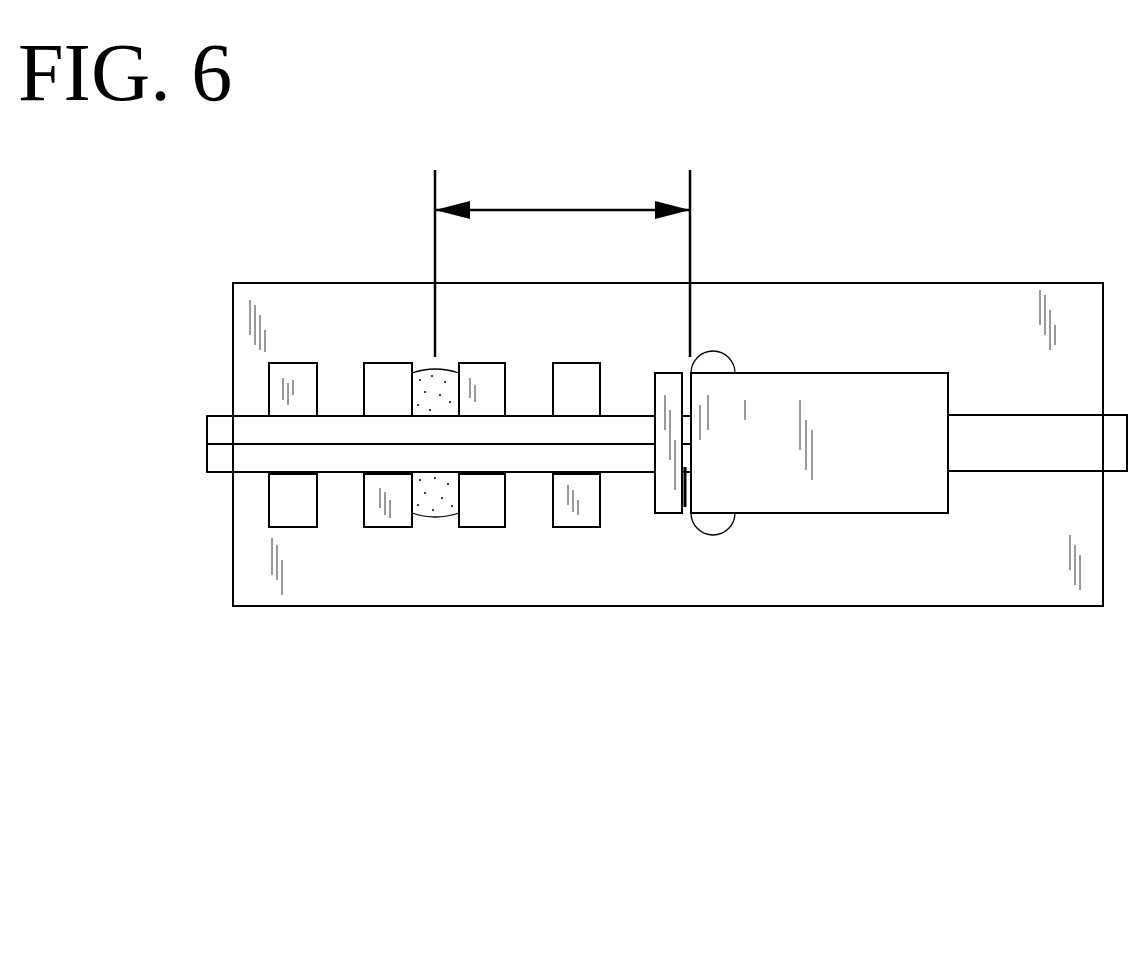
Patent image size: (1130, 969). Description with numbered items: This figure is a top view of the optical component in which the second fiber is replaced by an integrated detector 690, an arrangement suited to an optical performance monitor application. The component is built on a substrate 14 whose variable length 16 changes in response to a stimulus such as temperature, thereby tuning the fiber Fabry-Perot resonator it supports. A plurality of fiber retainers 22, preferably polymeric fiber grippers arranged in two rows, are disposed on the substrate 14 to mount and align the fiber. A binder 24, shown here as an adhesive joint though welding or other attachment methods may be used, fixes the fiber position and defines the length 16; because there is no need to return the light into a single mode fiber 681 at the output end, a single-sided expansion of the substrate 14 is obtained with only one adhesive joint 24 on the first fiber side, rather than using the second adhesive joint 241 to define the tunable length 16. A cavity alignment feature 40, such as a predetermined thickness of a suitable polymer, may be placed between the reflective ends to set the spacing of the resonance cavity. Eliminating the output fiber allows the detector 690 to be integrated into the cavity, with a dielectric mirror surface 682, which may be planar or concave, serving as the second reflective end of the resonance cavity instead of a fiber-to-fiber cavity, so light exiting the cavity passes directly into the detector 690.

The substrate 14 is at (1022, 606).
The variable length 16 is at (557, 209).
The fiber retainers 22 is at (488, 366).
The binder 24 is at (436, 505).
The cavity alignment feature 40 is at (663, 514).
The second adhesive joint 241 is at (712, 367).
The single mode fiber 681 is at (338, 425).
The dielectric mirror surface 682 is at (686, 514).
The optical detector 690 is at (885, 373).